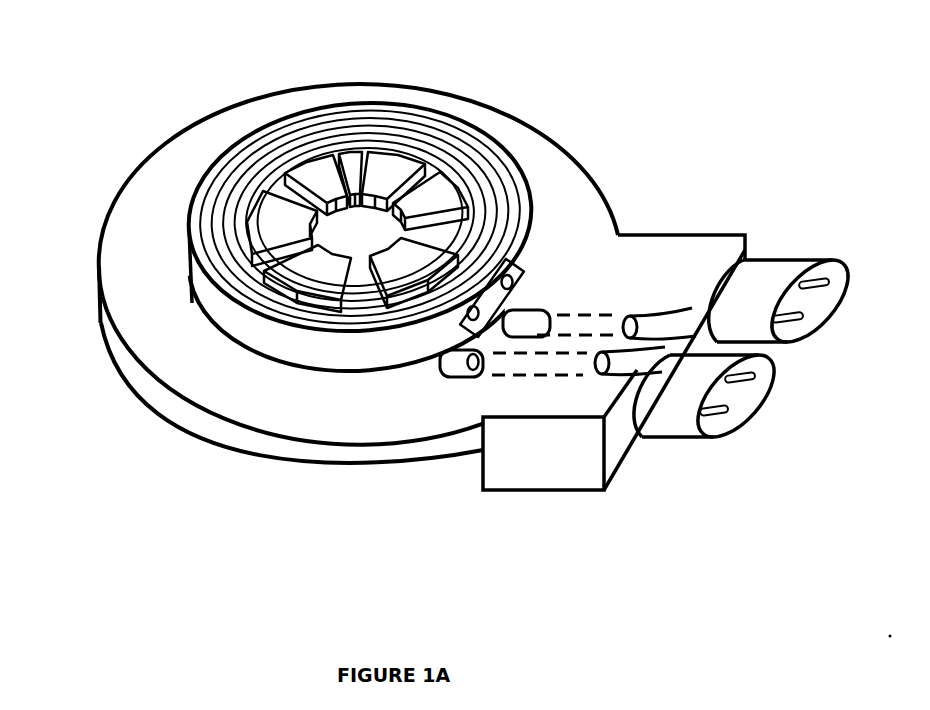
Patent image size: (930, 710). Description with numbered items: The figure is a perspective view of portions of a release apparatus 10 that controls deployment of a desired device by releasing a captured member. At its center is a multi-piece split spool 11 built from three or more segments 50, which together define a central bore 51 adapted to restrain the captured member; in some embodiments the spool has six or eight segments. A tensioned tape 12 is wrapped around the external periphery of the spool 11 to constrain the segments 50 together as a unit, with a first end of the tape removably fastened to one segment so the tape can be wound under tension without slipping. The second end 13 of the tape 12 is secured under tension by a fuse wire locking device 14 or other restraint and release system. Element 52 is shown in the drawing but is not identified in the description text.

The induction heating device 10 is at (372, 103).
The coil winding 11 is at (312, 140).
The coil housing 12 is at (223, 340).
The power cable 13 is at (500, 287).
The signal cable 14 is at (473, 358).
The housing top plate 50 is at (263, 182).
The magnetic core segment 51 is at (377, 152).
The base plate 52 is at (247, 457).